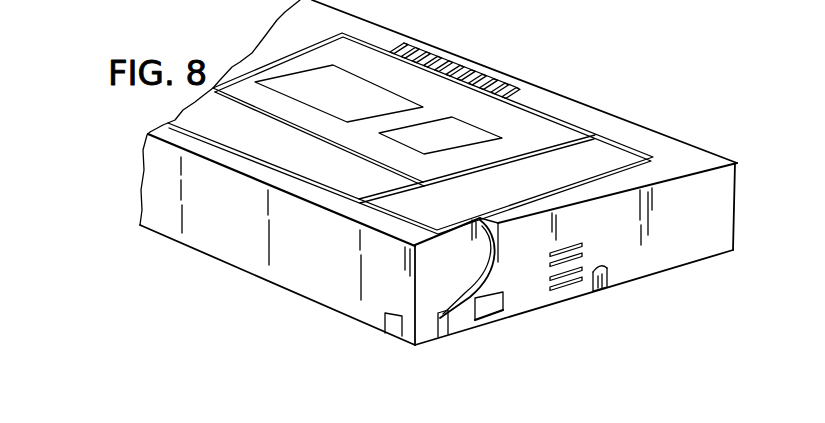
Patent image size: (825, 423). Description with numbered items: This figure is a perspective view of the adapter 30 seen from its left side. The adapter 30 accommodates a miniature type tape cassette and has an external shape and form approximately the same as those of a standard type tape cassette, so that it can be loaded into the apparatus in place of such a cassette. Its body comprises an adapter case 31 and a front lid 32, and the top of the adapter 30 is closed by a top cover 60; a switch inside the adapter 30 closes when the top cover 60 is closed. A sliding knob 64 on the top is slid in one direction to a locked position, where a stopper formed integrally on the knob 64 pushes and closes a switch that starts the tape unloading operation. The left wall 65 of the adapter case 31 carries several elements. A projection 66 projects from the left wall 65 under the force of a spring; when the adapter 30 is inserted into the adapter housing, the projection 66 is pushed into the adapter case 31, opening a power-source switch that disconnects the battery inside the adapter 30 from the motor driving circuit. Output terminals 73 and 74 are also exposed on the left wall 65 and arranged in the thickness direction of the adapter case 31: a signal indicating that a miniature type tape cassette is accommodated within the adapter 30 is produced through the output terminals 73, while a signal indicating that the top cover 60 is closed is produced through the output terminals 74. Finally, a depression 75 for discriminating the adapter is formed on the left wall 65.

The adapter 30 is at (453, 31).
The adapter case 31 is at (618, 117).
The front lid 32 is at (250, 266).
The top cover 60 is at (532, 117).
The sliding knob 64 is at (458, 56).
The left wall 65 is at (668, 265).
The projection 66 is at (607, 288).
The output terminals 73 is at (549, 280).
The output terminals 74 is at (548, 257).
The depression 75 is at (493, 307).